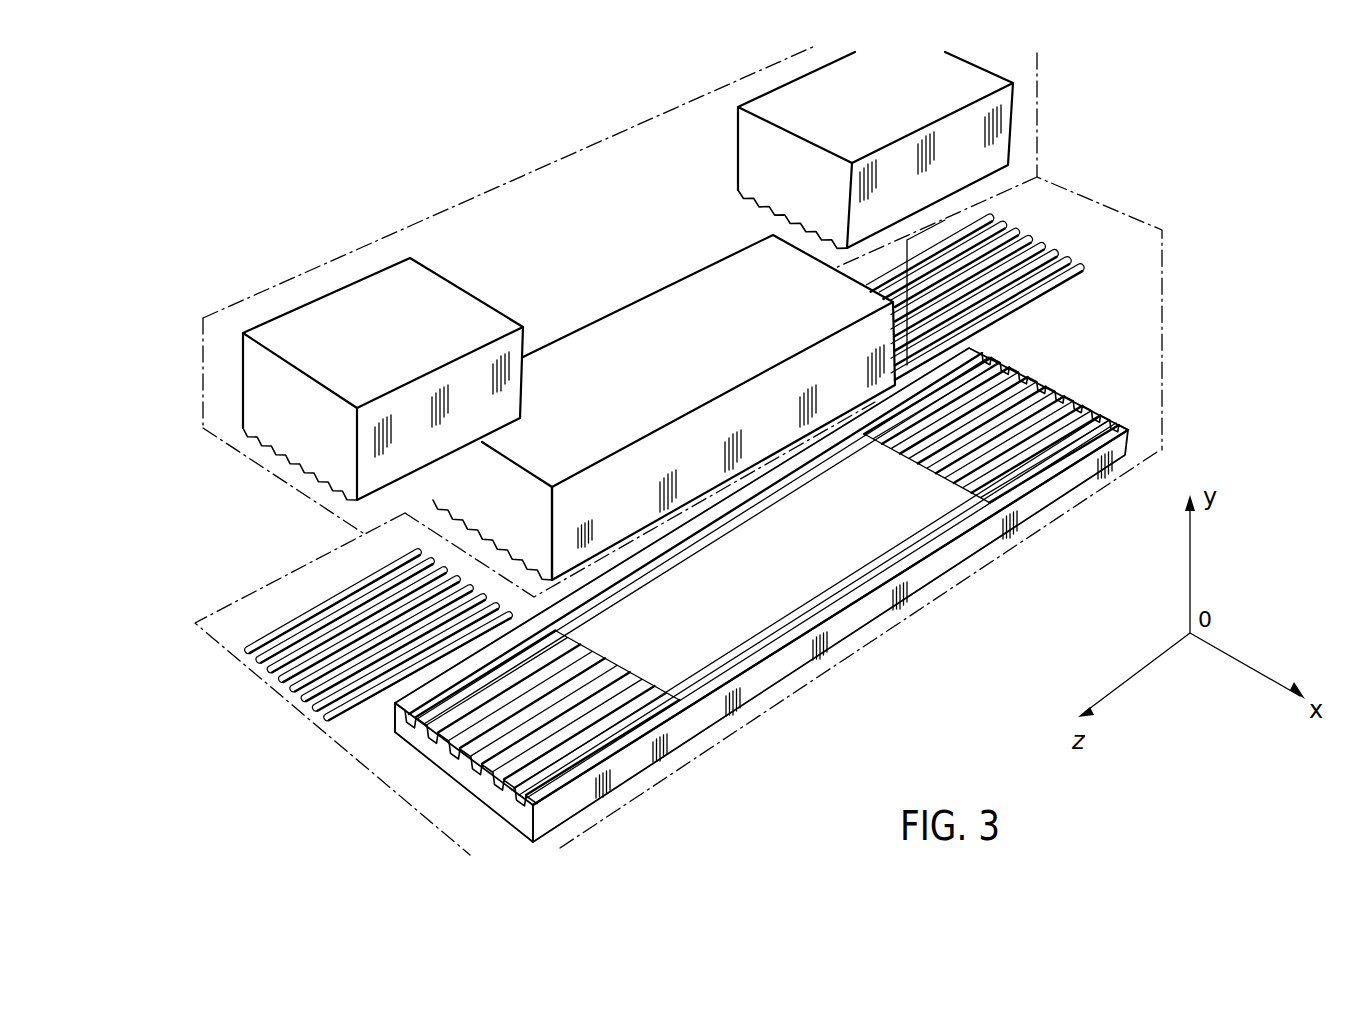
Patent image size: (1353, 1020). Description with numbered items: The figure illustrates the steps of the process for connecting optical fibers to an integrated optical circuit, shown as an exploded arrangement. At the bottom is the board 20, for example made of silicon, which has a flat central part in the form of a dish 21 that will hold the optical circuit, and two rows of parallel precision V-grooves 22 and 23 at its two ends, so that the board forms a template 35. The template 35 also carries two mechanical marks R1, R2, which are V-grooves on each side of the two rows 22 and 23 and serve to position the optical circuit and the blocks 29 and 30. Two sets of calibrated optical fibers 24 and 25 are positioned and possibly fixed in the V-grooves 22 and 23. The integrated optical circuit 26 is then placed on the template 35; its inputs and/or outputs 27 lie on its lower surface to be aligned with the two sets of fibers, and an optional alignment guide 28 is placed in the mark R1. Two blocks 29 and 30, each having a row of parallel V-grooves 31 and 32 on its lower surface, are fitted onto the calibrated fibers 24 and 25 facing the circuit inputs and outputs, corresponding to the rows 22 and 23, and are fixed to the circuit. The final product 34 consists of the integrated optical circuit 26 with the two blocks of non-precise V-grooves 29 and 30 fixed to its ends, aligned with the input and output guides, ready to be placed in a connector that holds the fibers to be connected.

The board 20 is at (714, 598).
The dish 21 is at (865, 545).
The row of parallel V-grooves 22 is at (445, 787).
The row of parallel V-grooves 23 is at (1052, 398).
The calibrated optical fibers 24 is at (280, 672).
The calibrated optical fibers 25 is at (1050, 278).
The integrated optical circuit 26 is at (663, 407).
The inputs and/or outputs 27 is at (540, 568).
The alignment guide 28 is at (432, 502).
The block 29 is at (379, 371).
The block 30 is at (833, 150).
The row of parallel V-grooves 31 is at (312, 470).
The row of parallel V-grooves 32 is at (772, 214).
The final product 34 is at (203, 350).
The template 35 is at (247, 597).
The mechanical mark R1 is at (405, 712).
The mechanical mark R2 is at (530, 808).